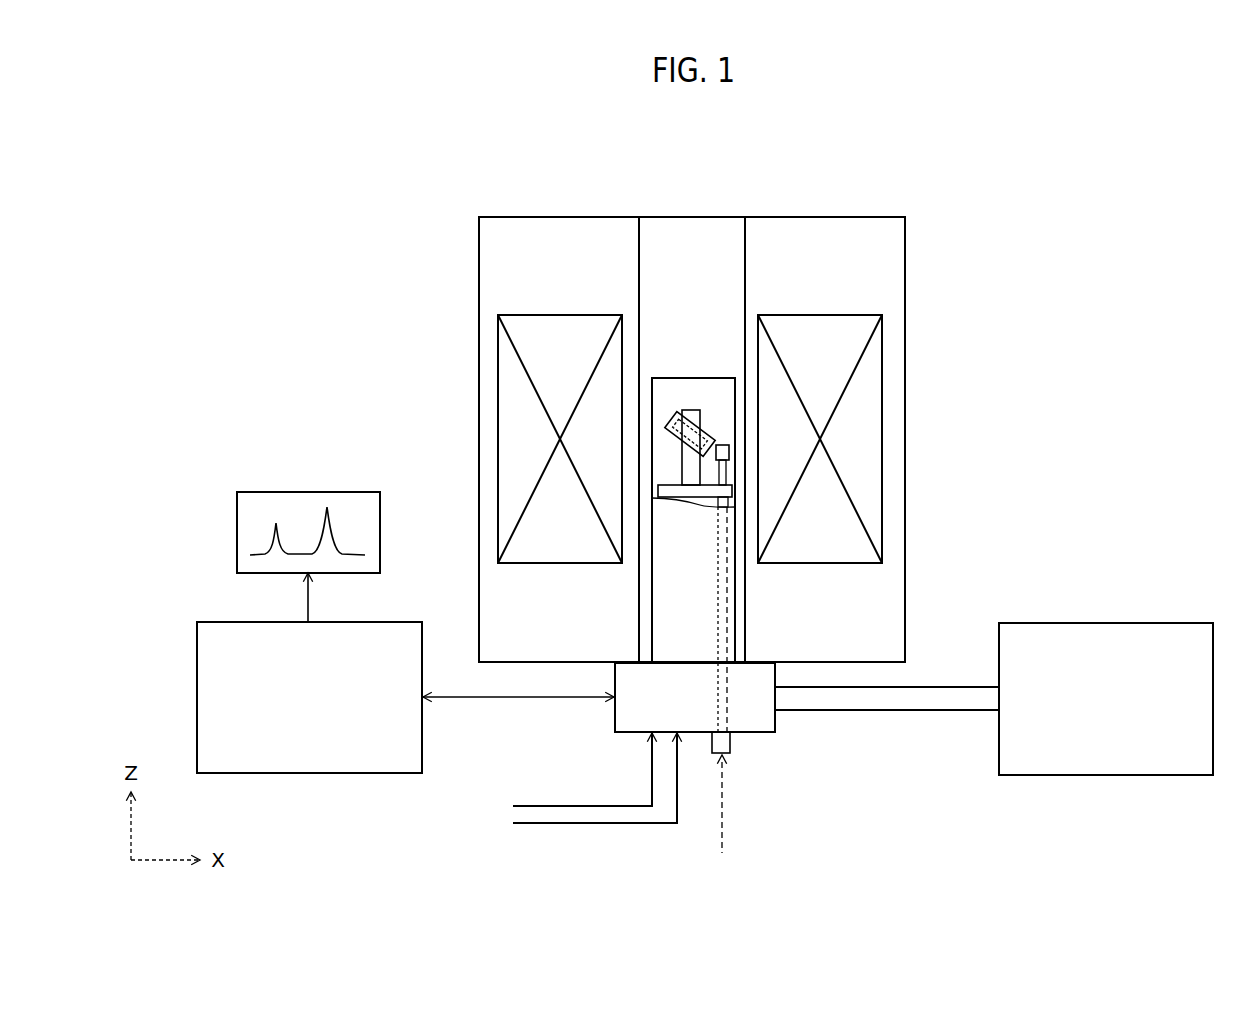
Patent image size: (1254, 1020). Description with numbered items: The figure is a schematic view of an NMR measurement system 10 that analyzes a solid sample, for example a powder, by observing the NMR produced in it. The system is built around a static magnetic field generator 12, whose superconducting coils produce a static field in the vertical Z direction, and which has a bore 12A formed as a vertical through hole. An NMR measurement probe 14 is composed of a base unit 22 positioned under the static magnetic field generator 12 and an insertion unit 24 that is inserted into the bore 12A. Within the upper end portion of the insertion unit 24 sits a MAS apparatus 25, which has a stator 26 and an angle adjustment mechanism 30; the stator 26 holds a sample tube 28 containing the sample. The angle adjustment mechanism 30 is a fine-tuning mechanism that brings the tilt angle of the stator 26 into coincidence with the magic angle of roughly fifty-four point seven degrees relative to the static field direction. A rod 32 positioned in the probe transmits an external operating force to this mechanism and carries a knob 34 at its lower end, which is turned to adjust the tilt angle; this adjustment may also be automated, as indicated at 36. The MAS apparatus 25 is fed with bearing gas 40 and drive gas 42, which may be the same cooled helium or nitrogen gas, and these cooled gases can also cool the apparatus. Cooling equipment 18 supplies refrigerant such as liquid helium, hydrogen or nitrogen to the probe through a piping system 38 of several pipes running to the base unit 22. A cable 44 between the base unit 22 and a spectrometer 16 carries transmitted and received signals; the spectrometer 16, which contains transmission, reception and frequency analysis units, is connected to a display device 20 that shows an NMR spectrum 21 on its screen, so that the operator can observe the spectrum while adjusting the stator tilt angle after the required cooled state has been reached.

The NMR measurement system 10 is at (421, 175).
The static magnetic field generator 12 is at (812, 214).
The bore 12A is at (745, 292).
The NMR measurement probe 14 is at (762, 740).
The spectrometer 16 is at (378, 621).
The cooling equipment 18 is at (1100, 622).
The display device 20 is at (285, 490).
The NMR spectrum 21 is at (338, 514).
The base unit 22 is at (612, 712).
The insertion unit 24 is at (688, 377).
The MAS apparatus 25 is at (960, 350).
The stator 26 is at (712, 426).
The sample tube 28 is at (668, 418).
The angle adjustment mechanism 30 is at (725, 443).
The rod 32 is at (727, 593).
The knob 34 is at (730, 748).
The automated tilt angle adjustment 36 is at (718, 802).
The piping system 38 is at (915, 686).
The bearing gas 40 is at (563, 805).
The drive gas 42 is at (566, 825).
The cable 44 is at (497, 701).